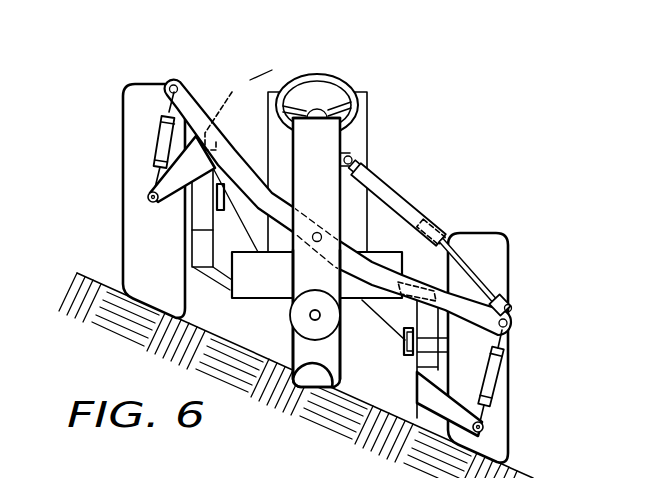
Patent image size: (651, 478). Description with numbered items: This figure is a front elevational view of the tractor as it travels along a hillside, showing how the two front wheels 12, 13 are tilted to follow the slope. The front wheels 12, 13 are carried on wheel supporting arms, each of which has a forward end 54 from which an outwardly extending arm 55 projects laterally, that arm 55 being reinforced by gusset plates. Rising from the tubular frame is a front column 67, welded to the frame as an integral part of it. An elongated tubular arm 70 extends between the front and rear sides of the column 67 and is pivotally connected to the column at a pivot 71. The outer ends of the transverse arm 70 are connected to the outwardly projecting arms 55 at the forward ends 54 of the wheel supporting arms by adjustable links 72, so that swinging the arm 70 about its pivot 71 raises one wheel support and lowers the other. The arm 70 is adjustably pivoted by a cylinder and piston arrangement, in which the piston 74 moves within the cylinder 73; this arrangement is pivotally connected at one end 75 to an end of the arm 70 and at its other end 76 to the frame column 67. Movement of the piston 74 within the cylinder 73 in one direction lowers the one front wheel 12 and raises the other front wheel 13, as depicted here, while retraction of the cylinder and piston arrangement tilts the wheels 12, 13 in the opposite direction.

The front wheel 12 is at (490, 243).
The front wheel 13 is at (137, 92).
The forward end of wheel support 54 is at (427, 362).
The outwardly extending arm 55 is at (175, 184).
The front column 67 is at (357, 172).
The elongated tubular arm 70 is at (196, 104).
The pivotal connection 71 is at (321, 236).
The adjustable link 72 is at (165, 132).
The cylinder 73 is at (410, 215).
The piston 74 is at (473, 275).
The pivotal connection of cylinder to arm 75 is at (517, 310).
The pivotal connection of cylinder to column 76 is at (352, 153).